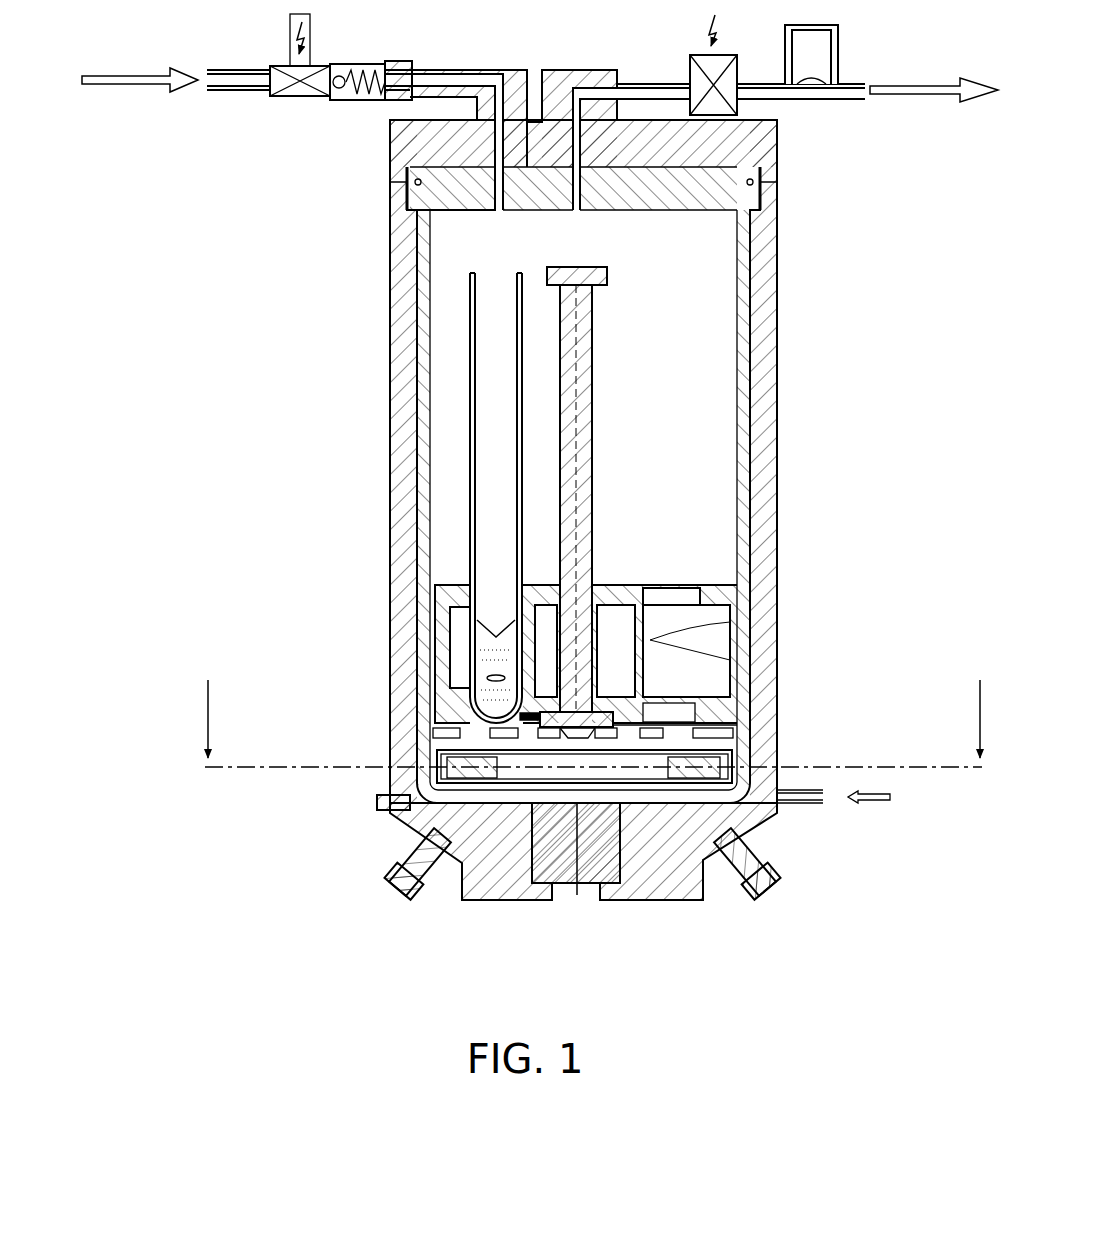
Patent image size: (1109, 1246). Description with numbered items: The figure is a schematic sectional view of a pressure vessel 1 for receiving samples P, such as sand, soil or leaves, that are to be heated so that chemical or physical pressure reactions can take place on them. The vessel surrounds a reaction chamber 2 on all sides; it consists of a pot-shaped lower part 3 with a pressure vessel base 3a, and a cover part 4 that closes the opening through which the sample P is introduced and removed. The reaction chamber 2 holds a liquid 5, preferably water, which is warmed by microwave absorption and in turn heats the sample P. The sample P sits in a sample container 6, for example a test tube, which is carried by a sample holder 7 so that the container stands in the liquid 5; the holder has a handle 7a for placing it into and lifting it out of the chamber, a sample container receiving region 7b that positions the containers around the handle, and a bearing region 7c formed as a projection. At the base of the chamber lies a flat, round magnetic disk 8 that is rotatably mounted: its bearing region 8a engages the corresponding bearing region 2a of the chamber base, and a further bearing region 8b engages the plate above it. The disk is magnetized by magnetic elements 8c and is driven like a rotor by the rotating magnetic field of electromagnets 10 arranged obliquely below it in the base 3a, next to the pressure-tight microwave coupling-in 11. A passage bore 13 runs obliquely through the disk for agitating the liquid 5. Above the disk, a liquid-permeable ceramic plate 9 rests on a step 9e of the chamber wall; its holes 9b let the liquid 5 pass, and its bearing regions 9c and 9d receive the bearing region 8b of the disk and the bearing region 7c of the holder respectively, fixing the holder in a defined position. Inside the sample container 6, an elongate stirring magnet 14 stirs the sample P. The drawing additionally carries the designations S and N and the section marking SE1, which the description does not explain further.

The pressure vessel 1 is at (922, 188).
The reaction chamber 2 is at (748, 383).
The bearing region of reaction chamber 2a is at (575, 873).
The lower part 3 is at (777, 777).
The pressure vessel base 3a is at (505, 875).
The cover part 4 is at (777, 135).
The liquid 5 is at (760, 636).
The sample container 6 is at (468, 372).
The sample holder 7 is at (708, 303).
The handle 7a is at (556, 318).
The sample container receiving region 7b is at (440, 605).
The bearing region of sample holder 7c is at (612, 712).
The magnetic disk 8 is at (424, 756).
The bearing region of magnetic disk 8a is at (576, 843).
The bearing region of magnetic disk 8b is at (640, 860).
The magnetic elements 8c is at (380, 800).
The plate 9 is at (777, 700).
The holes 9b is at (740, 742).
The bearing region of plate 9c is at (651, 880).
The bearing region of plate 9d is at (719, 636).
The step 9e is at (777, 717).
The electromagnet 10 is at (415, 890).
The microwave coupling-in 11 is at (590, 895).
The passage bore 13 is at (400, 845).
The stirring magnet 14 is at (490, 678).
The sample P is at (475, 582).
The sample S is at (485, 665).
The nozzle N is at (447, 712).
The section line SE1 is at (591, 707).